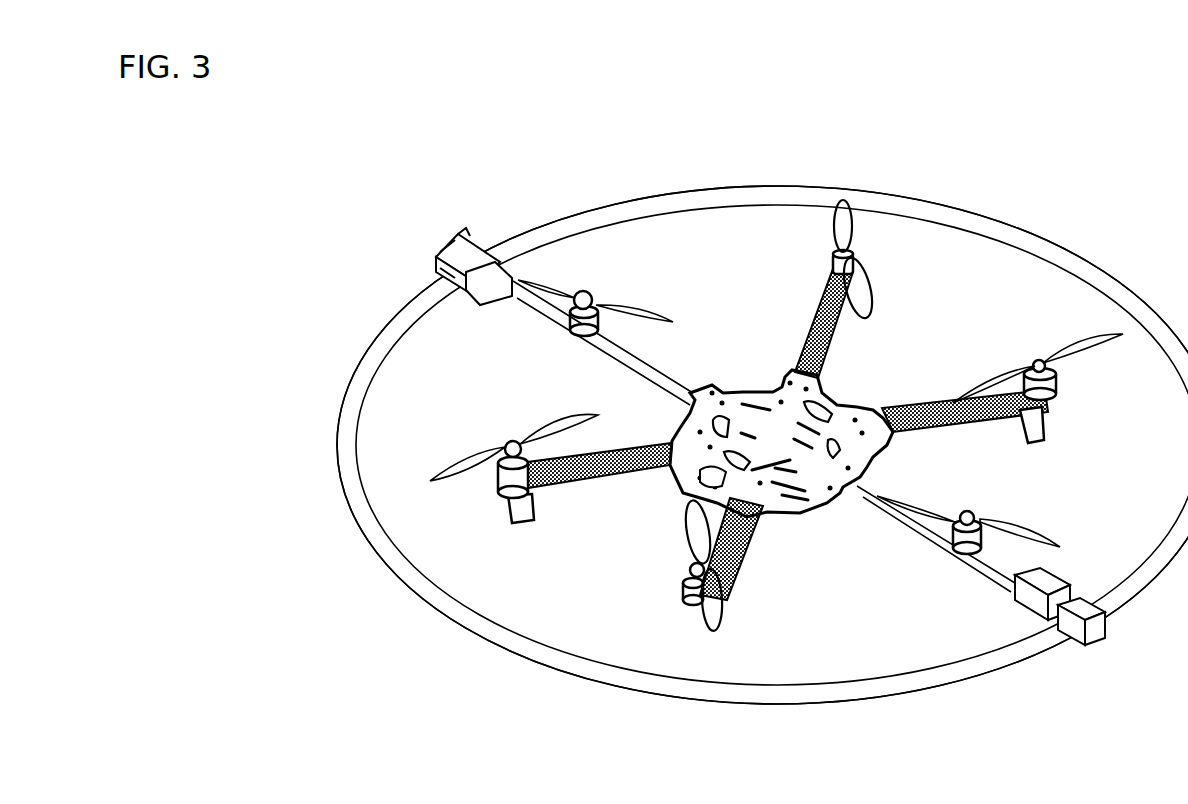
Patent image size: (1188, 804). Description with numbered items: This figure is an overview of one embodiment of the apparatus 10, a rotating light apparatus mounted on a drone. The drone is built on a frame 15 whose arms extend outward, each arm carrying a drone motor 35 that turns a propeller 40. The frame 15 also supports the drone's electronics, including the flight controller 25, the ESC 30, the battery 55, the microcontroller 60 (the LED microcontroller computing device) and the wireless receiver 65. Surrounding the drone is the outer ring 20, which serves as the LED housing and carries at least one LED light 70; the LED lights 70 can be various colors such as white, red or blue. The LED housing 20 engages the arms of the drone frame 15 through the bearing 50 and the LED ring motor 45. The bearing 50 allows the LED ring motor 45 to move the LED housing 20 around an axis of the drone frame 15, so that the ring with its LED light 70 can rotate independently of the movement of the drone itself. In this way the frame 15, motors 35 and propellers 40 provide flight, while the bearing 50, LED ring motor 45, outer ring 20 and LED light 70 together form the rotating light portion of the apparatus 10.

The apparatus 10 is at (833, 207).
The frame for drone 15 is at (778, 414).
The outer ring for LED 20 is at (763, 686).
The flight controller 25 is at (778, 423).
The ESC 30 is at (813, 327).
The drone motor 35 is at (705, 480).
The propeller 40 is at (472, 468).
The LED ring motor 45 is at (1047, 583).
The bearing or servo 50 is at (513, 277).
The battery 55 is at (458, 287).
The microcontroller 60 is at (460, 249).
The wireless receiver 65 is at (463, 233).
The LED light 70 is at (1070, 273).